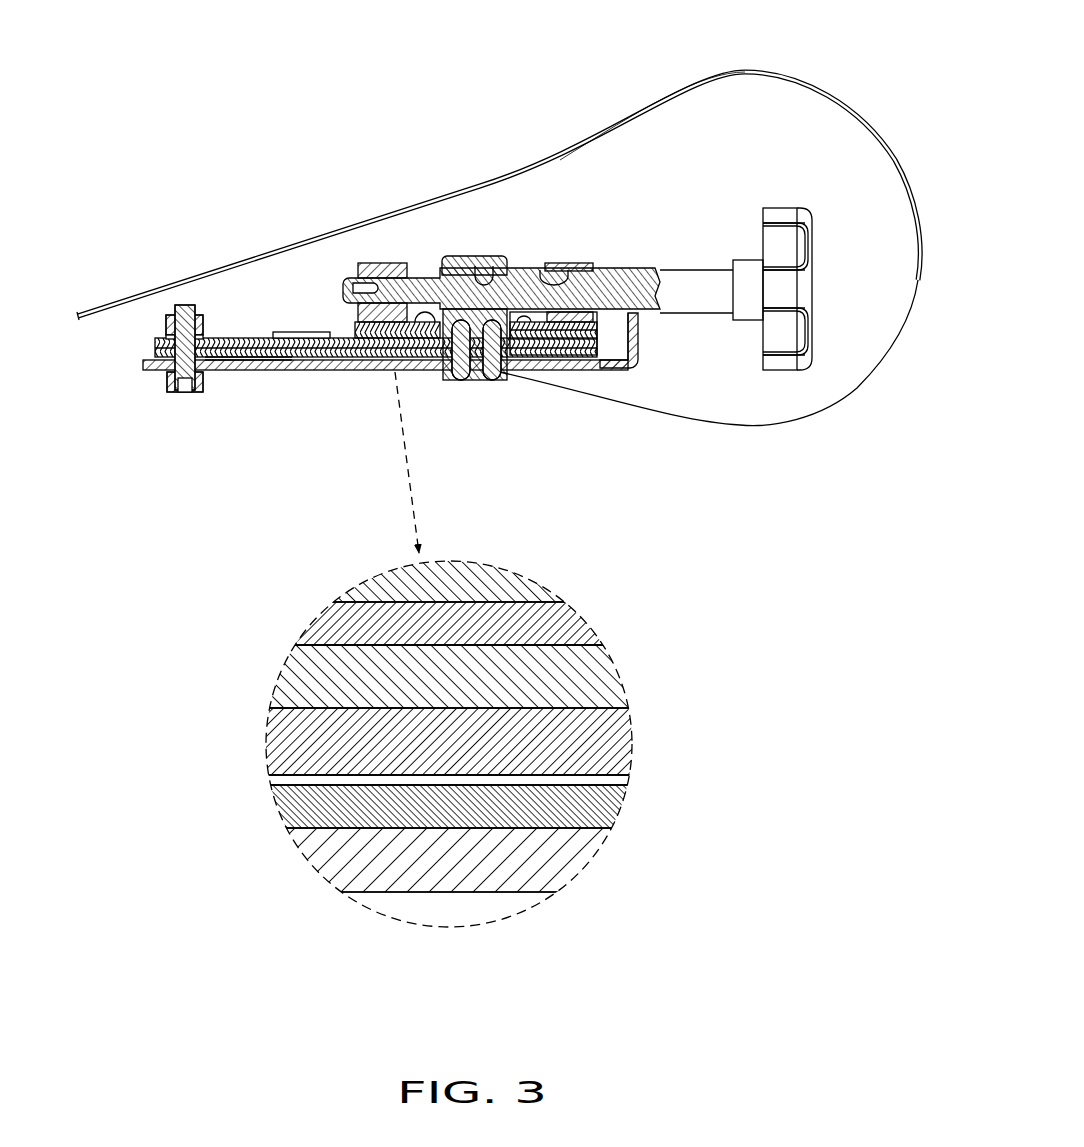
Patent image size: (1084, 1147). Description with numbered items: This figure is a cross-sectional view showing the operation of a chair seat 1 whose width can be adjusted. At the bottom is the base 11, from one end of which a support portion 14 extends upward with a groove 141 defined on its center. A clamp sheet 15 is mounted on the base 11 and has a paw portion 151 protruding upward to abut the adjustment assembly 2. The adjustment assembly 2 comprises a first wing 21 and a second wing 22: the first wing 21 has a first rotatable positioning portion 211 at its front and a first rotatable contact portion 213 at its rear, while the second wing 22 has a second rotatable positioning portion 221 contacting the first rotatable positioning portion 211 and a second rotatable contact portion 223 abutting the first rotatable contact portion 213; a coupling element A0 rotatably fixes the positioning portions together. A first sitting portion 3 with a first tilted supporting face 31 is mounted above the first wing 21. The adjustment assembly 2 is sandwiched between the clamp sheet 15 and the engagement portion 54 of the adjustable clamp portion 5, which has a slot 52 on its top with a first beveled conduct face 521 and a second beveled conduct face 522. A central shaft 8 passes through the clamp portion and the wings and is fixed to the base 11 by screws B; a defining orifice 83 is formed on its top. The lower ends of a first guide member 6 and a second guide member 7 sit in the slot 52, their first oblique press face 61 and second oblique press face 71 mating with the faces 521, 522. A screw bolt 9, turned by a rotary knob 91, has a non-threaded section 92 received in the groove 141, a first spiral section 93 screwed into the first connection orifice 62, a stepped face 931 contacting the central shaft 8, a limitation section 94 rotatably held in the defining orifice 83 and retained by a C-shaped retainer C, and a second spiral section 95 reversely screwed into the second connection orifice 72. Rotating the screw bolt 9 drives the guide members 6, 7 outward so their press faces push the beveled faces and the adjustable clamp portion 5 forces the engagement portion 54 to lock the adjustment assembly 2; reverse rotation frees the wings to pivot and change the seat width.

The chair seat 1 is at (196, 183).
The adjustment assembly 2 is at (310, 528).
The first sitting portion 3 is at (890, 348).
The first tilted supporting face 31 is at (650, 150).
The adjustable clamp portion 5 is at (643, 338).
The slot 52 is at (545, 372).
The first beveled conduct face 521 is at (525, 372).
The second beveled conduct face 522 is at (425, 372).
The engagement portion 54 is at (585, 350).
The first guide member 6 is at (535, 268).
The first oblique press face 61 is at (560, 360).
The first connection orifice 62 is at (490, 268).
The second guide member 7 is at (355, 278).
The second oblique press face 71 is at (335, 283).
The second connection orifice 72 is at (340, 295).
The central shaft 8 is at (452, 256).
The defining orifice 83 is at (440, 268).
The screw bolt 9 is at (814, 214).
The rotary knob 91 is at (805, 328).
The non-threaded section 92 is at (740, 330).
The first spiral section 93 is at (568, 264).
The stepped face 931 is at (465, 268).
The limitation section 94 is at (393, 268).
The second spiral section 95 is at (362, 266).
The base 11 is at (205, 375).
The support portion 14 is at (650, 350).
The groove 141 is at (658, 330).
The clamp sheet 15 is at (303, 371).
The paw portion 151 is at (628, 780).
The first wing 21 is at (272, 360).
The first rotatable positioning portion 211 is at (160, 348).
The first rotatable contact portion 213 is at (612, 350).
The second wing 22 is at (257, 362).
The second rotatable positioning portion 221 is at (170, 372).
The second rotatable contact portion 223 is at (590, 338).
The coupling element A0 is at (182, 392).
The screws B is at (450, 382).
The C-shaped retainer C is at (388, 268).